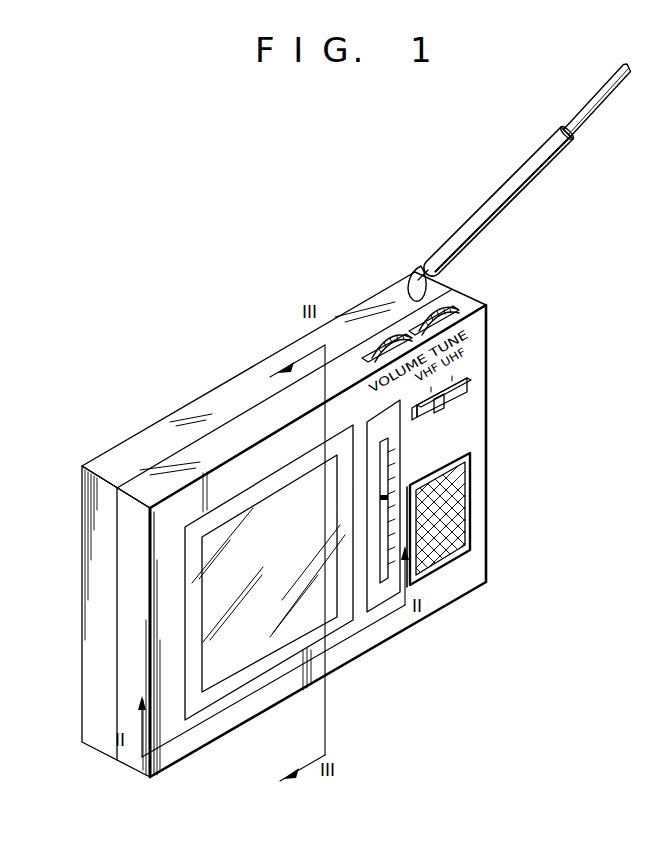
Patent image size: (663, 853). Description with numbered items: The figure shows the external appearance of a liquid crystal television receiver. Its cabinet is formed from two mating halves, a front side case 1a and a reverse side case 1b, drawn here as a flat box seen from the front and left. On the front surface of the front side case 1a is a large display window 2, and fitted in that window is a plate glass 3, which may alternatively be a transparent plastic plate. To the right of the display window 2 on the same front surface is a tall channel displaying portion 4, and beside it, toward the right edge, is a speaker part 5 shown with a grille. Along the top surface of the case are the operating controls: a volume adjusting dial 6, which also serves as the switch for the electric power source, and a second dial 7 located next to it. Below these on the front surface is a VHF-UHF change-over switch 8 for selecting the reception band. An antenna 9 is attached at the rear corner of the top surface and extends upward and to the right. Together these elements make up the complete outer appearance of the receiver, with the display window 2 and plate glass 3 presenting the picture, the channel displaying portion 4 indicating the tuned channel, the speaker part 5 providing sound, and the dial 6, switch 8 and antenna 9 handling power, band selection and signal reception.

The front side case 1a is at (190, 752).
The reverse side case 1b is at (90, 644).
The display window 2 is at (273, 638).
The plate glass 3 is at (243, 685).
The channel displaying portion 4 is at (392, 594).
The speaker part 5 is at (468, 508).
The volume adjusting dial 6 is at (387, 345).
The tuning control thumbwheel 7 is at (450, 310).
The VHF-UHF change-over switch 8 is at (448, 400).
The antenna 9 is at (488, 206).